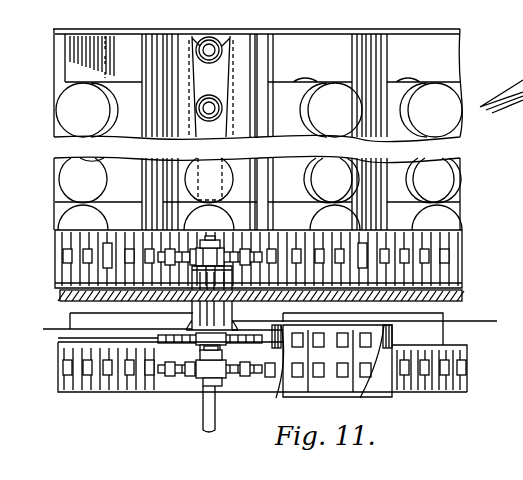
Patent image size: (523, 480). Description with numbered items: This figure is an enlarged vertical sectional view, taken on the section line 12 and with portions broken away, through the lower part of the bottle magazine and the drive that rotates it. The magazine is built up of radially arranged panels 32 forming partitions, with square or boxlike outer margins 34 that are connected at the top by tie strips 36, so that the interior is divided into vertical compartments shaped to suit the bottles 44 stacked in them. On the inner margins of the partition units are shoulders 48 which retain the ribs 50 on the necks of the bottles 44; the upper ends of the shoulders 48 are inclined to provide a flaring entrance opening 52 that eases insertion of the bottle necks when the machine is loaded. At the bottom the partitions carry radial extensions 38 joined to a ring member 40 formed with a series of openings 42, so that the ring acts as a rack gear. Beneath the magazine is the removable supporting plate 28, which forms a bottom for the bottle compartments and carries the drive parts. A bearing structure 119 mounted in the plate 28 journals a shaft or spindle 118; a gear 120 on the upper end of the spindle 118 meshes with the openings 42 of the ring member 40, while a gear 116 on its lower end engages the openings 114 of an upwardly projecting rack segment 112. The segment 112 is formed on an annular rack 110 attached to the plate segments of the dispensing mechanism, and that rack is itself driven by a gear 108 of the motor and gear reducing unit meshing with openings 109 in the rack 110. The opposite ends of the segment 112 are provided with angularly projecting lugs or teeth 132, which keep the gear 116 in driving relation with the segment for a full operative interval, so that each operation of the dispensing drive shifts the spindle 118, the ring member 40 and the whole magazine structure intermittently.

The section line 12 is at (49, 322).
The supporting plate 28 is at (459, 292).
The radially arranged panels 32 is at (380, 53).
The boxlike outer margins 34 is at (357, 52).
The tie strips 36 is at (448, 33).
The radial extensions 38 is at (92, 32).
The ring member 40 is at (457, 240).
The openings 42 is at (406, 250).
The bottles 44 is at (352, 105).
The shoulders 48 is at (205, 137).
The ribs 50 is at (196, 35).
The flaring entrance opening 52 is at (232, 34).
The gear 108 is at (183, 372).
The openings 109 is at (425, 373).
The annular rack 110 is at (468, 357).
The rack segments 112 is at (333, 392).
The openings 114 is at (370, 338).
The gear 116 is at (172, 333).
The shaft or spindle 118 is at (208, 236).
The bearing structure 119 is at (233, 312).
The gear 120 is at (257, 262).
The lugs or teeth 132 is at (333, 369).